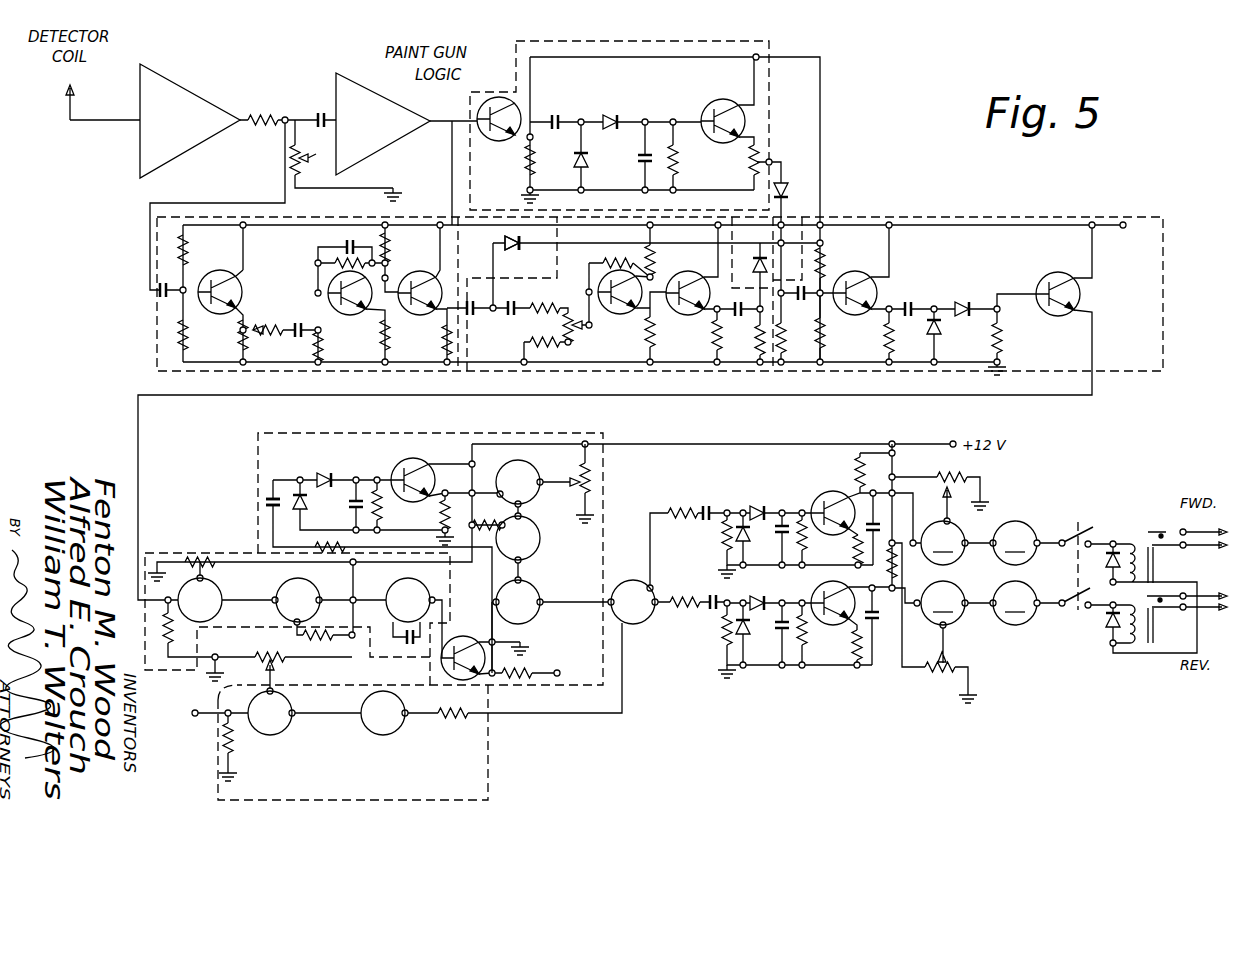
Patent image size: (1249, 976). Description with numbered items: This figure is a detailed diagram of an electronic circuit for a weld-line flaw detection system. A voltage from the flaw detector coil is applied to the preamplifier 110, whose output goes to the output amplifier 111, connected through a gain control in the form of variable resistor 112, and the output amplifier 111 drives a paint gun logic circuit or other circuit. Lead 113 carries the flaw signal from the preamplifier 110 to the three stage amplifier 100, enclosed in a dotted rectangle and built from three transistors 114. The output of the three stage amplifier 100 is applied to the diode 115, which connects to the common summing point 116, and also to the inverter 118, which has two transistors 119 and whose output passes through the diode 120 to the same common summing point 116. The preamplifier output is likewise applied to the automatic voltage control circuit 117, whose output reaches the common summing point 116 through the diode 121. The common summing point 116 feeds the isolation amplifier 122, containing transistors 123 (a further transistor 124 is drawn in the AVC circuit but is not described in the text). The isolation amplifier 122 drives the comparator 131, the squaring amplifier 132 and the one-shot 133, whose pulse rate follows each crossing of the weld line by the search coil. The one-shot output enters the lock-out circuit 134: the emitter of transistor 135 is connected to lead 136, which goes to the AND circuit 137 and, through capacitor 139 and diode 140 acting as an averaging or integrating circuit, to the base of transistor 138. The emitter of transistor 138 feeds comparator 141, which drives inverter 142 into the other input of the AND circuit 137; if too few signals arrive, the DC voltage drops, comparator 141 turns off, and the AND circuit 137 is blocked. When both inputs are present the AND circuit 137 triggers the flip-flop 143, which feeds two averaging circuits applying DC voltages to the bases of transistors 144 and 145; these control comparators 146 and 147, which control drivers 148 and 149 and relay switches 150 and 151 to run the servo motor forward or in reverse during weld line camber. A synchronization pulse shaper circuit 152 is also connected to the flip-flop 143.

The three stage amplifier 100 is at (157, 332).
The preamplifier 110 is at (194, 87).
The output amplifier 111 is at (368, 157).
The variable resistor 112 is at (346, 160).
The lead 113 is at (150, 232).
The transistor 114 is at (244, 287).
The diode 115 is at (508, 248).
The common summing point 116 is at (790, 215).
The automatic voltage control circuit 117 is at (770, 40).
The inverter 118 is at (545, 372).
The transistor 119 is at (617, 315).
The diode 120 is at (752, 268).
The diode 121 is at (792, 188).
The isolation amplifier 122 is at (1163, 320).
The transistor 123 is at (520, 108).
The transistor 124 is at (708, 106).
The comparator 131 is at (218, 584).
The squaring amplifier 132 is at (300, 580).
The one-shot 133 is at (404, 580).
The lock-out circuit 134 is at (258, 451).
The transistor 135 is at (460, 640).
The lead 136 is at (496, 630).
The AND circuit 137 is at (540, 590).
The transistor 138 is at (410, 460).
The capacitor 139 is at (262, 503).
The diode 140 is at (330, 472).
The comparator 141 is at (528, 462).
The inverter 142 is at (542, 543).
The flip-flop 143 is at (642, 626).
The transistor 144 is at (836, 490).
The transistor 145 is at (825, 588).
The comparator 146 is at (943, 543).
The comparator 147 is at (943, 603).
The driver 148 is at (1015, 543).
The driver 149 is at (1015, 603).
The relay switch 150 is at (1132, 541).
The relay switch 151 is at (1130, 650).
The synchronization pulse shaper circuit 152 is at (490, 757).